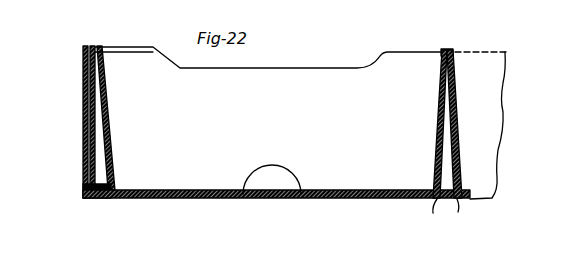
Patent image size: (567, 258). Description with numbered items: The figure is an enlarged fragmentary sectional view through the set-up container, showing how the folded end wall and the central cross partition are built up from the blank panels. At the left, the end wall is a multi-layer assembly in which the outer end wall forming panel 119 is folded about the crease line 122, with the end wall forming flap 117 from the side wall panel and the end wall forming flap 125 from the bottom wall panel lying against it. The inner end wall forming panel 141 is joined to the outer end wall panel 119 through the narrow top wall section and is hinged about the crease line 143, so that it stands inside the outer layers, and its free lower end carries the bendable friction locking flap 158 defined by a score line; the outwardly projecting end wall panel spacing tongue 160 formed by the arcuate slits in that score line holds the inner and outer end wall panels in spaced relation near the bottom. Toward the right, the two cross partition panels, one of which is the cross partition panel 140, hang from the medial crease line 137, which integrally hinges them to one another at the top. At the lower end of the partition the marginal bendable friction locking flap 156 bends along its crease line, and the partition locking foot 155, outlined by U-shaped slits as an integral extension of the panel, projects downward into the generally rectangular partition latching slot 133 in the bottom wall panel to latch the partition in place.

The crease line 122 is at (84, 47).
The end wall forming flap 125 is at (90, 90).
The end wall forming flap 117 is at (89, 108).
The outer end wall forming panel 119 is at (89, 127).
The inner end wall forming panel 141 is at (104, 94).
The crease line 143 is at (96, 47).
The end wall panel spacing tongue 160 is at (98, 188).
The friction locking flap 158 is at (137, 192).
The crease line 137 is at (445, 51).
The cross partition panel 140 is at (441, 92).
The partition latching slot 133 is at (459, 183).
The friction locking flap 156 is at (430, 194).
The partition locking foot 155 is at (433, 213).